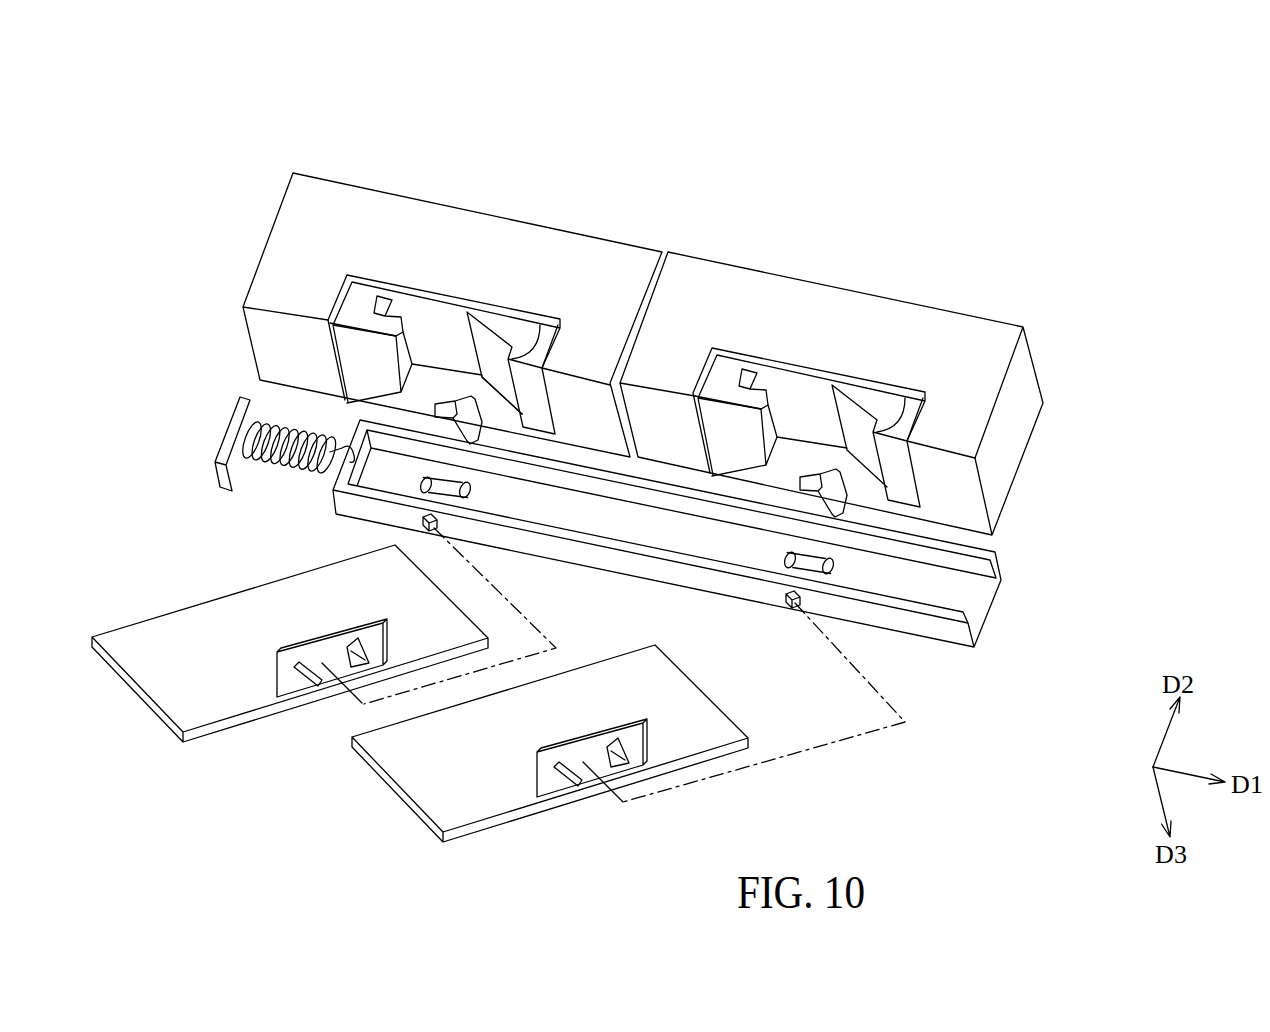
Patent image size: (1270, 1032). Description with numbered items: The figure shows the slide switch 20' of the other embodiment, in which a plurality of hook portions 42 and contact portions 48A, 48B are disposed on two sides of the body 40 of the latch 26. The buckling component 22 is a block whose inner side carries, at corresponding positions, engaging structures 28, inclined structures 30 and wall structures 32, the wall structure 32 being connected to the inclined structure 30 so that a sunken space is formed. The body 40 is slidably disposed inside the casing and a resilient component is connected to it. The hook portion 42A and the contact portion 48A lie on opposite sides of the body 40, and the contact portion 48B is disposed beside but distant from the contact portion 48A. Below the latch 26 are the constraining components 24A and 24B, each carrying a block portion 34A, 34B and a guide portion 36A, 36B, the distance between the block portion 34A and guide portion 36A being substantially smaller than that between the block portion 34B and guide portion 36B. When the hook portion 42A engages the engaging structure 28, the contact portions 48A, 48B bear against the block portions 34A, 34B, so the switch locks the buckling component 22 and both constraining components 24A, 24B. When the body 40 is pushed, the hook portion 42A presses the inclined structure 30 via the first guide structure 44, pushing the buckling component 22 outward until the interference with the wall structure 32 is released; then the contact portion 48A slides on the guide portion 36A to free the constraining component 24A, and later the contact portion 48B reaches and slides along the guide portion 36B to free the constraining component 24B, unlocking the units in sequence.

The slide switch 20' is at (612, 483).
The buckling component 22 is at (617, 257).
The constraining component 24A is at (290, 637).
The constraining component 24B is at (522, 749).
The latch 26 is at (673, 522).
The engaging structure 28 is at (392, 305).
The inclined structure 30 is at (498, 312).
The wall structure 32 is at (540, 325).
The block portion 34A is at (370, 658).
The block portion 34B is at (632, 757).
The guide portion 36A is at (310, 668).
The guide portion 36B is at (570, 770).
The body 40 is at (982, 594).
The hook portion 42 is at (812, 482).
The hook portion 42A is at (447, 403).
The first guide structure 44 is at (477, 398).
The contact portion 48A is at (420, 520).
The contact portion 48B is at (788, 597).